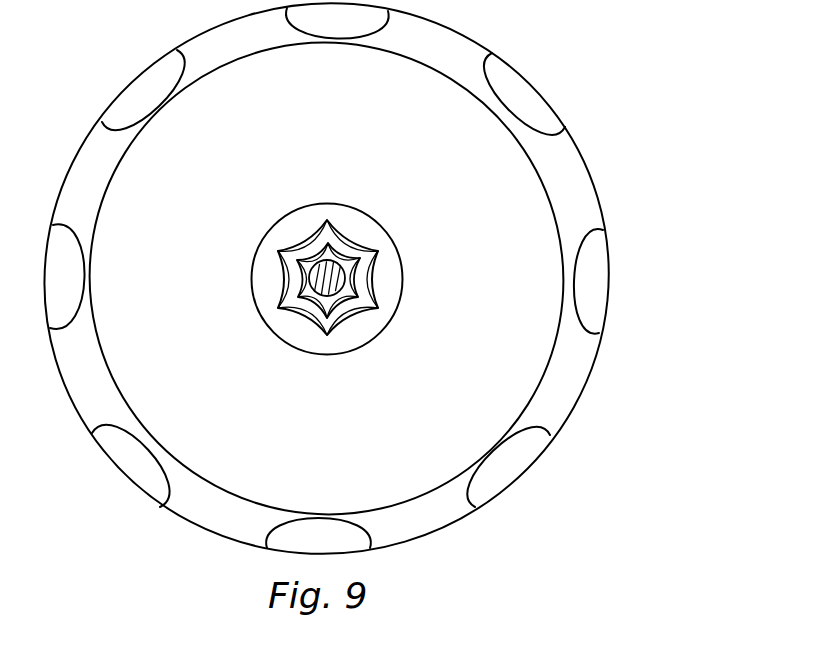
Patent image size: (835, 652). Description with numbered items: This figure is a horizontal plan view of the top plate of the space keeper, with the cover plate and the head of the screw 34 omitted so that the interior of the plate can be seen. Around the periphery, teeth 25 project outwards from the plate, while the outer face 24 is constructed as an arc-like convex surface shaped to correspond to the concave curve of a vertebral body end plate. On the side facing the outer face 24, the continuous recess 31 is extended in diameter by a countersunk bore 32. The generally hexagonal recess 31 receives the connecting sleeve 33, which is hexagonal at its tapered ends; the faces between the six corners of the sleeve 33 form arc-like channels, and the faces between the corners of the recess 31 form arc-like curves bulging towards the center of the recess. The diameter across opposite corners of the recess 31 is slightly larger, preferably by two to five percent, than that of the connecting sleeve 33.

The outer face 24 is at (528, 290).
The teeth 25 is at (592, 297).
The continuous recess 31 is at (342, 320).
The countersunk bore 32 is at (357, 325).
The connecting sleeve 33 is at (362, 286).
The screw 34 is at (342, 279).